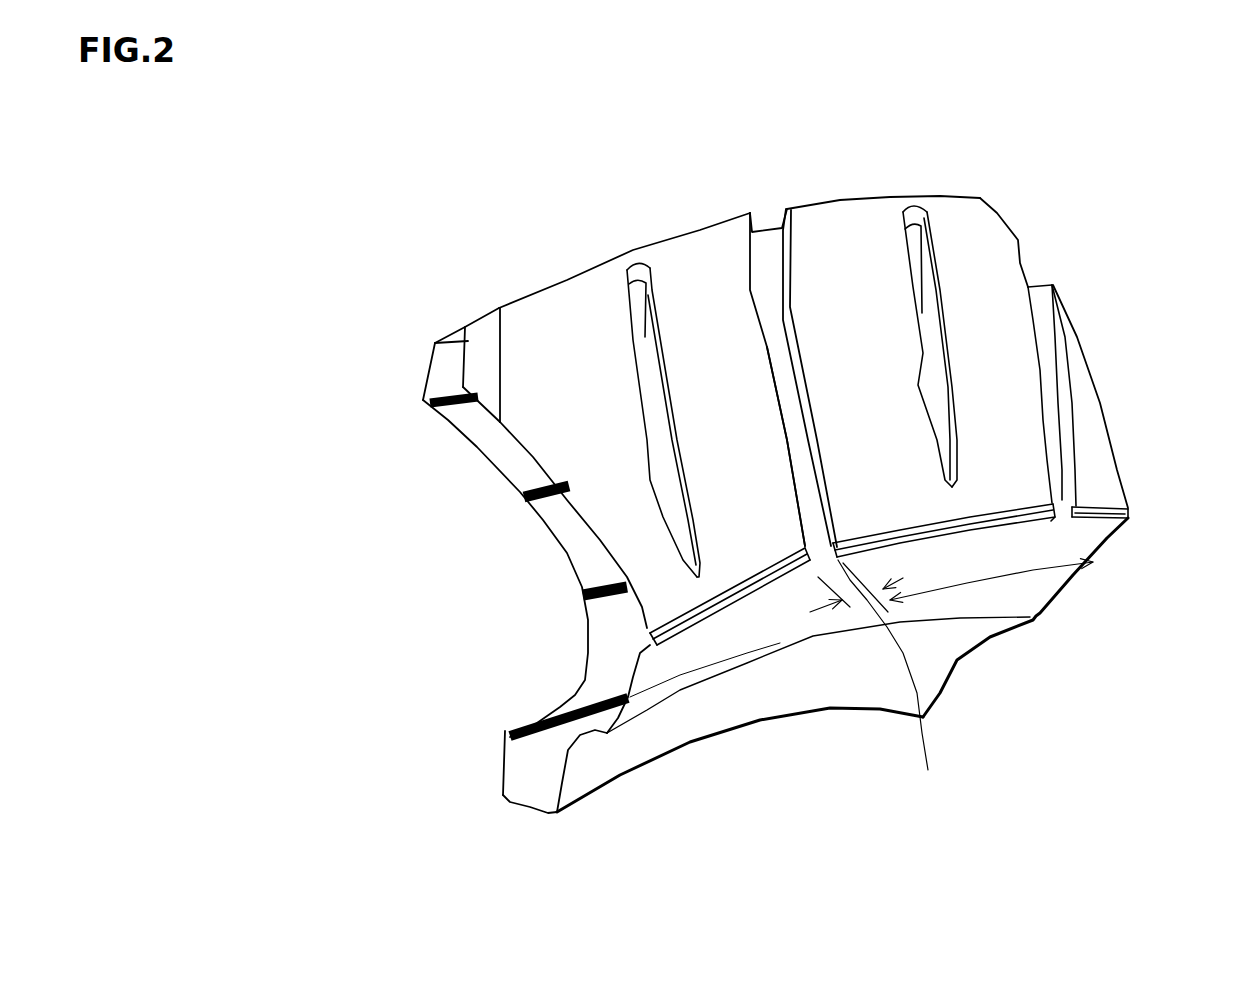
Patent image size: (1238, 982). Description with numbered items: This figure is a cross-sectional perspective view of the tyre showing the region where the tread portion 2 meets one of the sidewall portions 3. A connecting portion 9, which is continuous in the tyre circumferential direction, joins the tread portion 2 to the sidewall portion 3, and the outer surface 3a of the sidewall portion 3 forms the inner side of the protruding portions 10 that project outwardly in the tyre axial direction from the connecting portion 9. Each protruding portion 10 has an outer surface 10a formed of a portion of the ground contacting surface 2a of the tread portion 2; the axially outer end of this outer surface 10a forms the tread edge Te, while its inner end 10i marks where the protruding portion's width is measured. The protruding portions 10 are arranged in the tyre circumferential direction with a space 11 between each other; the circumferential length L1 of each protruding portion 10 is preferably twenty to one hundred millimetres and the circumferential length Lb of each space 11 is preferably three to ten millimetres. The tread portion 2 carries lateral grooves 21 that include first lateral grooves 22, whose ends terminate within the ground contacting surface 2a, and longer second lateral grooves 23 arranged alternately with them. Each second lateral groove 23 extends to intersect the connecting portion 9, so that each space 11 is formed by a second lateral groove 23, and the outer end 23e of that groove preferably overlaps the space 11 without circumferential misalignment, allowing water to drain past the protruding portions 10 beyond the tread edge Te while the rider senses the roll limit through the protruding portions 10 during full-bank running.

The tread portion 2 is at (695, 309).
The ground contacting surface 2a is at (739, 309).
The first lateral grooves 22 is at (778, 343).
The lateral grooves 21 is at (785, 336).
The second lateral grooves 23 is at (793, 378).
The tread edge Te is at (1051, 346).
The inner end of the outer surface 10i is at (1091, 395).
The space 11 is at (840, 752).
The outer surface 10a is at (1151, 476).
The protruding portions 10 is at (687, 815).
The outer end of the second lateral groove 23e is at (620, 458).
The connecting portion 9 is at (561, 684).
The length of the protruding portion L1 is at (1016, 603).
The length of the space Lb is at (894, 683).
The sidewall portion 3 is at (842, 668).
The outer surface of the sidewall portion 3a is at (743, 625).